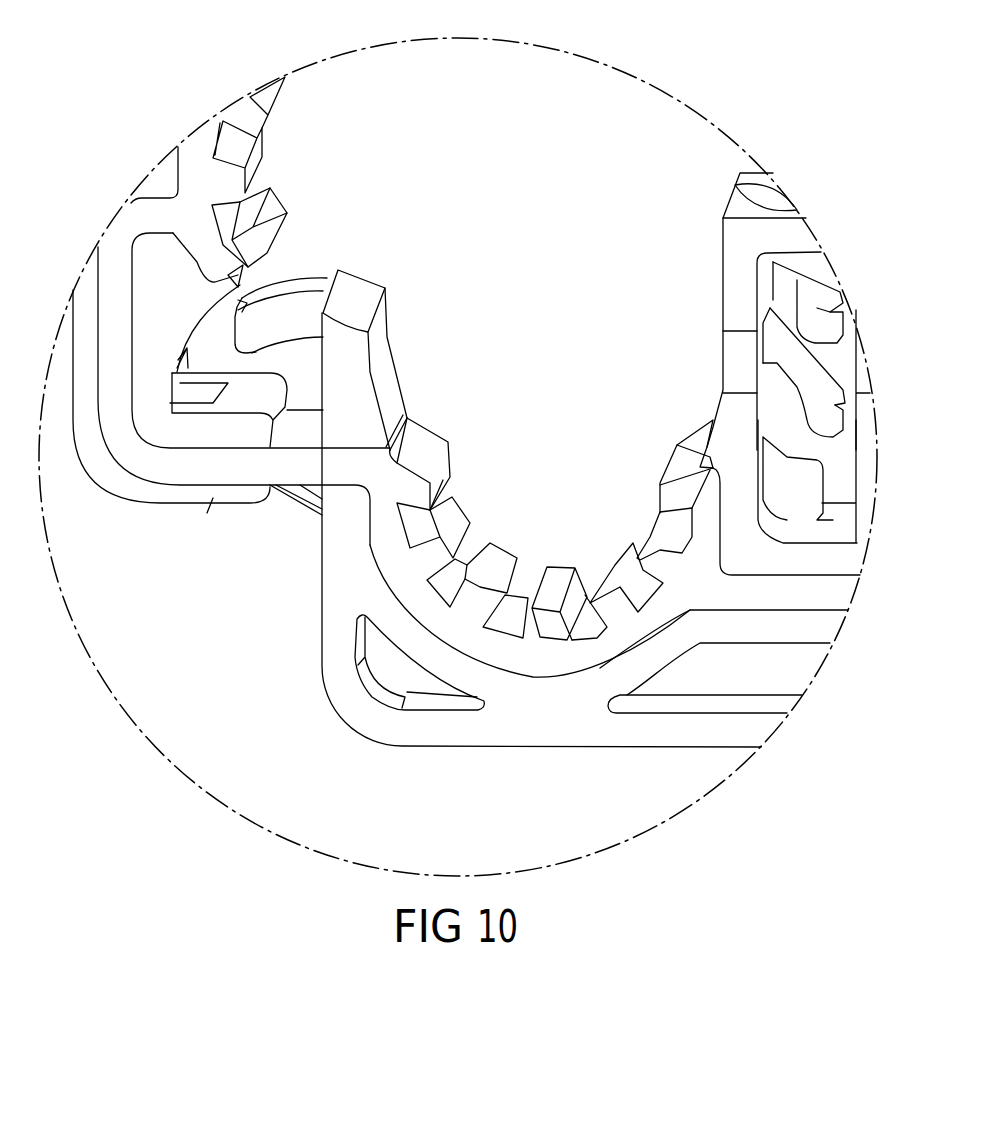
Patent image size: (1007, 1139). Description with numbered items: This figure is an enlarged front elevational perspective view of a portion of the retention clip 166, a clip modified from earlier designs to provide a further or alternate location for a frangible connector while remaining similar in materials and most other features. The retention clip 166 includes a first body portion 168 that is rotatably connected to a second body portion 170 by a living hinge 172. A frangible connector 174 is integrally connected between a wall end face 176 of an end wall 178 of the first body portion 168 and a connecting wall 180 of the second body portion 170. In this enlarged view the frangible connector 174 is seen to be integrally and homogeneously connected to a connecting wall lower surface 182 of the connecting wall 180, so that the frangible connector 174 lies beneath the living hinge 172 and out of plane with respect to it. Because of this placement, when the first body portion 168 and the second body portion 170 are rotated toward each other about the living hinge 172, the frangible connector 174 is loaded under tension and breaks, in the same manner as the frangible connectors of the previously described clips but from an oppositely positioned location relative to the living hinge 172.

The retention clip 166 is at (722, 100).
The first body portion 168 is at (442, 730).
The second body portion 170 is at (87, 420).
The living hinge 172 is at (310, 433).
The frangible connector 174 is at (303, 510).
The wall end face 176 is at (321, 621).
The end wall 178 is at (330, 577).
The connecting wall 180 is at (213, 498).
The connecting wall lower surface 182 is at (237, 506).